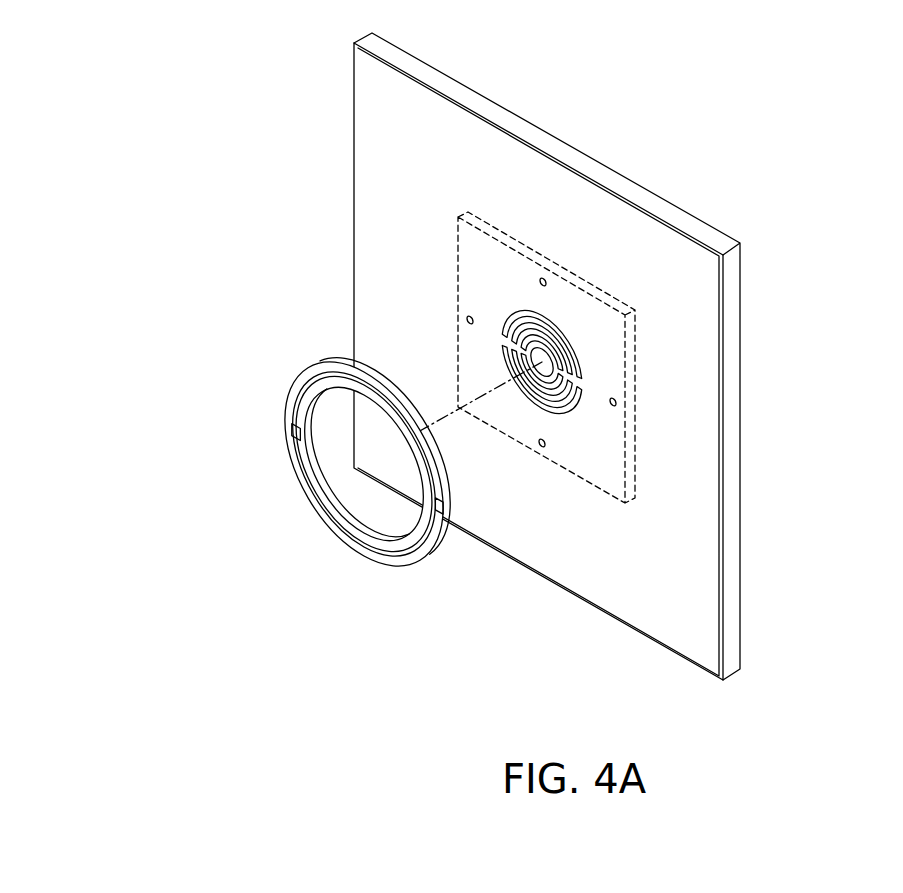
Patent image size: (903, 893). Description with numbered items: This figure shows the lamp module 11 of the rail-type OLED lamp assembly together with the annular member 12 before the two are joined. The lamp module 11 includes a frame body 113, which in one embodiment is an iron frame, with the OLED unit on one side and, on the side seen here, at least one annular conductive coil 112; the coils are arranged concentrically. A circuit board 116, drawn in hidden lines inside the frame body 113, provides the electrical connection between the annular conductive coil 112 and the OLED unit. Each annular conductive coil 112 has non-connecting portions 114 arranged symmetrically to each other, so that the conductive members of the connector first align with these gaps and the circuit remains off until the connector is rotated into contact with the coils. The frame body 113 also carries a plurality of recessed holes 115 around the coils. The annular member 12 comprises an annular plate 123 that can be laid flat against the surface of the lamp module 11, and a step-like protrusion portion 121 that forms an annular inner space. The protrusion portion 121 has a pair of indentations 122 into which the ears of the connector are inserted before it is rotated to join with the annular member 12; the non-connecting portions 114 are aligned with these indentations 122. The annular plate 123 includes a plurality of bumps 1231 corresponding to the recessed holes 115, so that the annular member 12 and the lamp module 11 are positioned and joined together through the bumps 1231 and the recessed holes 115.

The lamp module 11 is at (624, 356).
The frame body 113 is at (702, 232).
The annular conductive coil 112 is at (567, 347).
The non-connecting portion 114 is at (582, 385).
The recessed hole 115 is at (616, 403).
The circuit board 116 is at (520, 248).
The annular member 12 is at (317, 473).
The annular plate 123 is at (300, 378).
The indentation 122 is at (293, 432).
The protrusion portion 121 is at (302, 470).
The bump 1231 is at (444, 503).